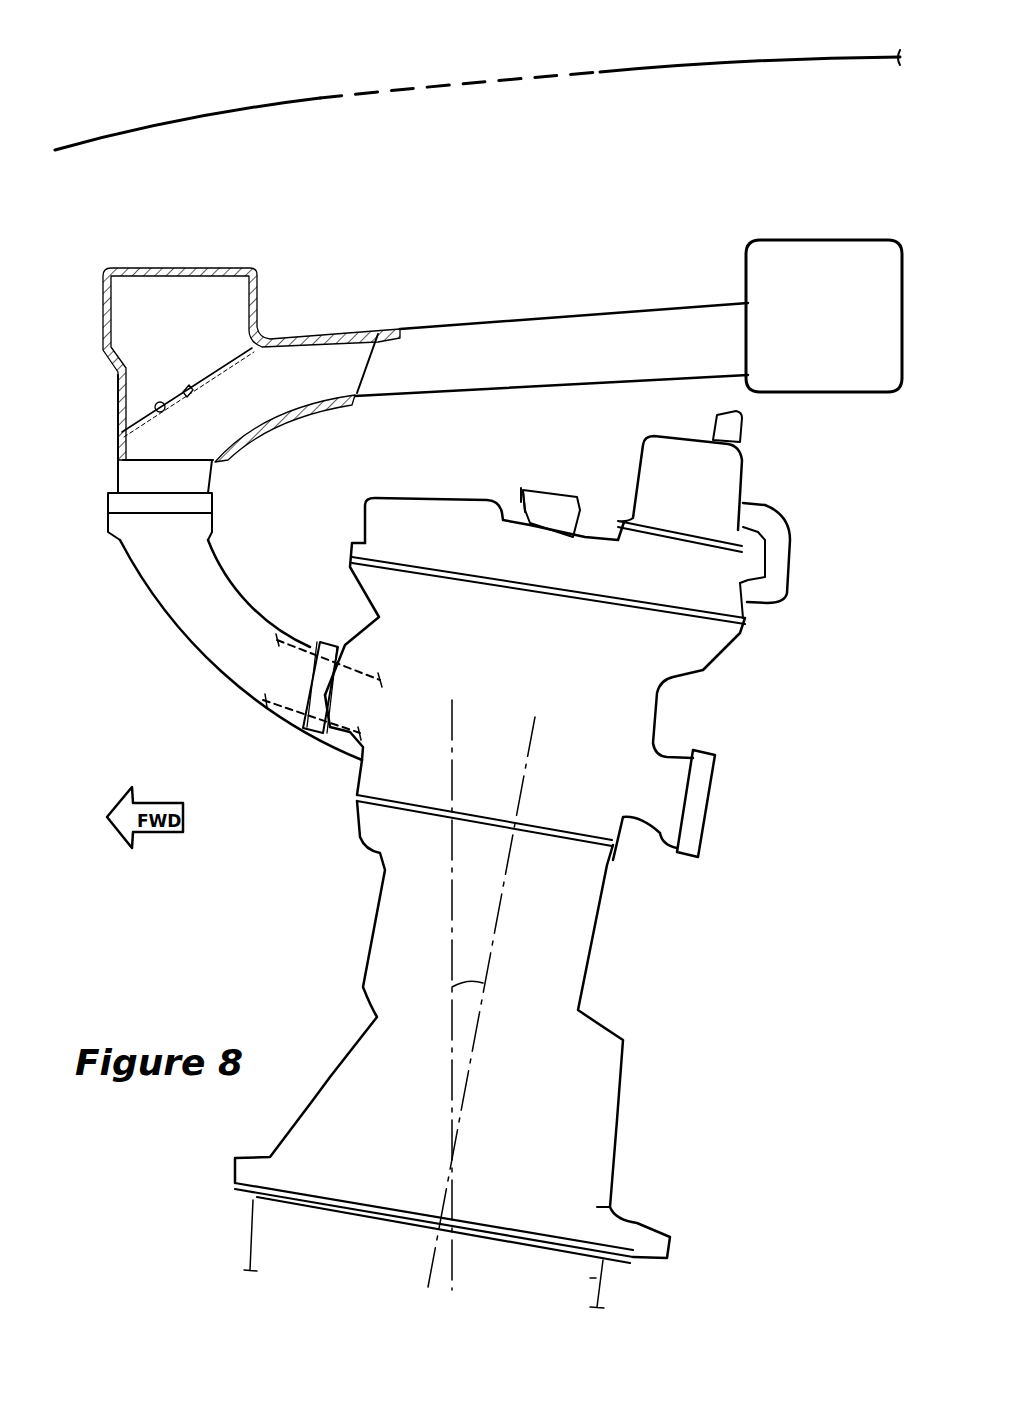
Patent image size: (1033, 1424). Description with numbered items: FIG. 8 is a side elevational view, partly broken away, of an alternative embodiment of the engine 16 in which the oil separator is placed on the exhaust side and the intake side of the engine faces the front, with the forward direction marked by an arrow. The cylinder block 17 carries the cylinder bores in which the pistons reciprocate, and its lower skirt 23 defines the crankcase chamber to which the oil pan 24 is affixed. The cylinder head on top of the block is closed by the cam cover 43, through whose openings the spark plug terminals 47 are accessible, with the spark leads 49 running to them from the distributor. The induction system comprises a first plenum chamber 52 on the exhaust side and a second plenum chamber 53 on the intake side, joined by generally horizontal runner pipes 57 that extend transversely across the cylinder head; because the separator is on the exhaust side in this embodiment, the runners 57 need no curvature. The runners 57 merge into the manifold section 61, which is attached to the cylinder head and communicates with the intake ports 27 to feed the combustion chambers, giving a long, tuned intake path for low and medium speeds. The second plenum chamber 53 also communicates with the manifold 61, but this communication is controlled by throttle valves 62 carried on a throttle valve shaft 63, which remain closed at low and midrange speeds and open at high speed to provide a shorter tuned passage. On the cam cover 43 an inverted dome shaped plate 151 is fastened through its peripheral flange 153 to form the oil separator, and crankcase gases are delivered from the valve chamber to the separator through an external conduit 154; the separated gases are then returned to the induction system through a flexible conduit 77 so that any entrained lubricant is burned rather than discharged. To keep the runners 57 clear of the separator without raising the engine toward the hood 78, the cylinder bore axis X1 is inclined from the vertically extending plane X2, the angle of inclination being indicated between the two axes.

The engine 16 is at (720, 708).
The cylinder block 17 is at (573, 903).
The skirt 23 is at (597, 1207).
The oil pan 24 is at (590, 1278).
The intake ports 27 is at (380, 685).
The cam cover 43 is at (395, 527).
The spark plug terminals 47 is at (560, 510).
The spark leads 49 is at (525, 493).
The first plenum chamber 52 is at (833, 262).
The second plenum chamber 53 is at (172, 300).
The runner pipes 57 is at (515, 337).
The manifold section 61 is at (183, 615).
The throttle valves 62 is at (138, 412).
The throttle valve shaft 63 is at (160, 402).
The flexible conduit 77 is at (735, 432).
The hood 78 is at (482, 128).
The inverted dome shaped plate 151 is at (732, 475).
The peripheral flange 153 is at (757, 543).
The external conduit 154 is at (780, 567).
The axis of the cylinder bores X1 is at (465, 1080).
The vertically extending plane X2 is at (452, 1060).